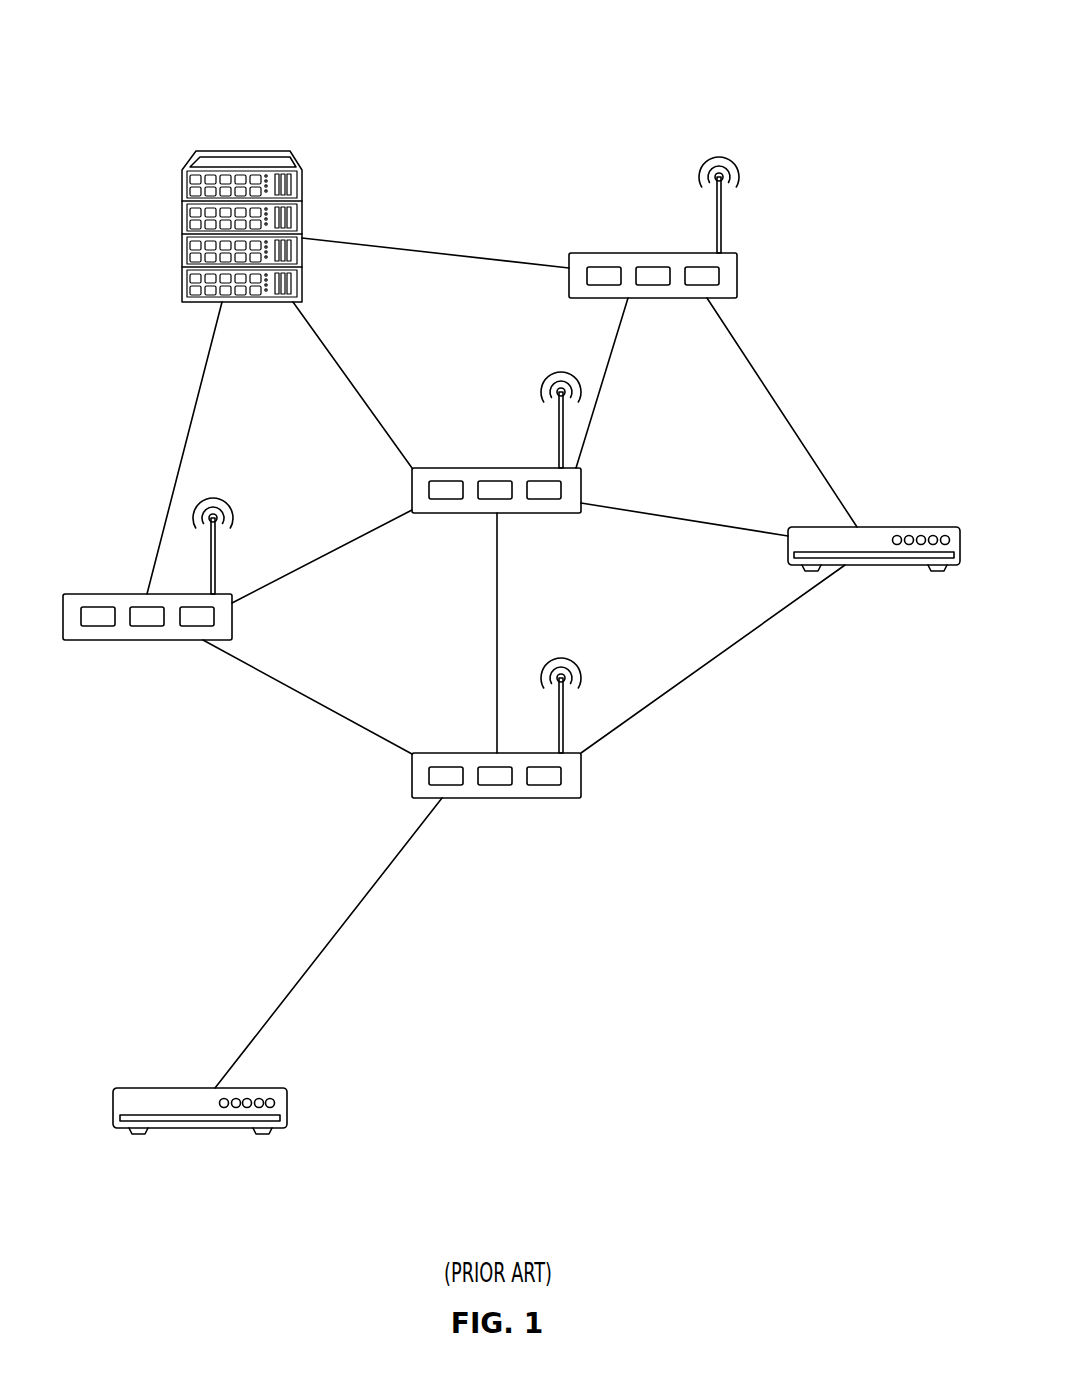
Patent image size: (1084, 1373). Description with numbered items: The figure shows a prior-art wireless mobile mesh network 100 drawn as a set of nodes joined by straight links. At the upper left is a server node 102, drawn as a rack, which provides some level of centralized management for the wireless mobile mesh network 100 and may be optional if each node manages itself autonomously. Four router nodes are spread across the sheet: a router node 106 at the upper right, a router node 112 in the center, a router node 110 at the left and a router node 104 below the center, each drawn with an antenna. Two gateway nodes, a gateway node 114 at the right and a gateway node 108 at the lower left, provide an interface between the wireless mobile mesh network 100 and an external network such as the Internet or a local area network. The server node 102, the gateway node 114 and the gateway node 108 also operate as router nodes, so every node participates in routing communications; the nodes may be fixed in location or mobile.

The wireless mobile mesh network 100 is at (851, 70).
The server node 102 is at (243, 150).
The router node 104 is at (497, 798).
The router node 106 is at (737, 270).
The gateway node 108 is at (200, 1088).
The router node 110 is at (93, 640).
The router node 112 is at (447, 513).
The gateway node 114 is at (878, 527).